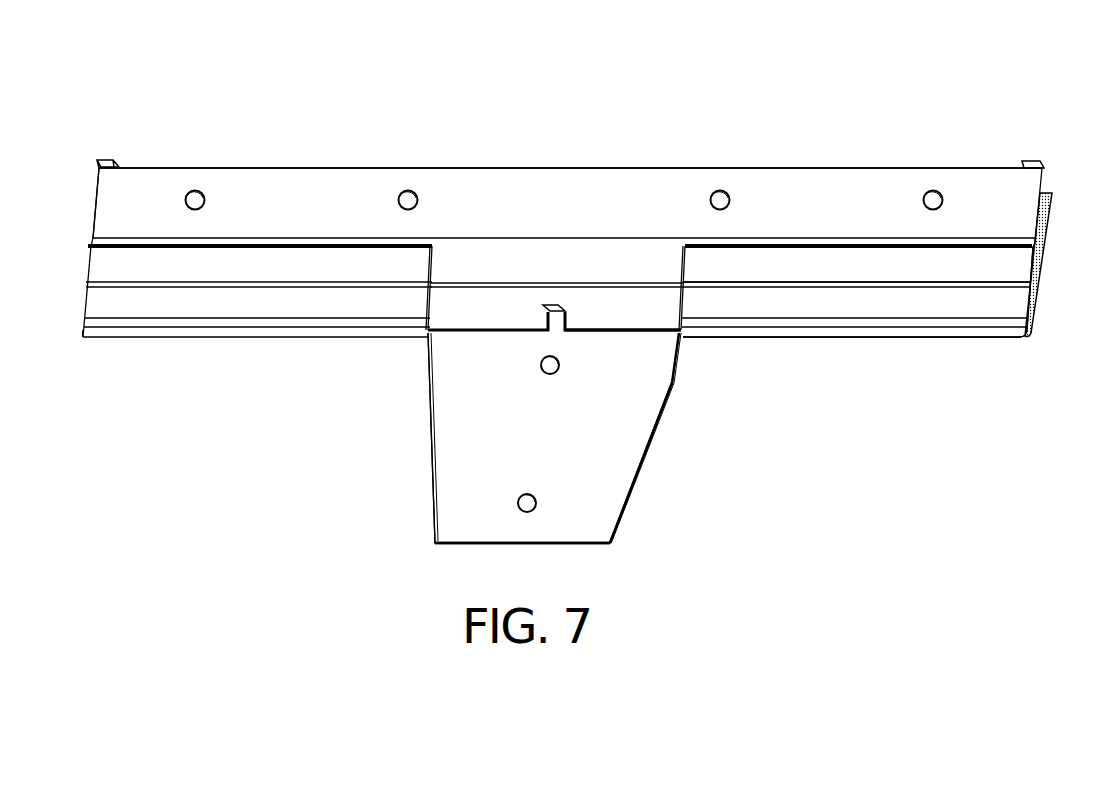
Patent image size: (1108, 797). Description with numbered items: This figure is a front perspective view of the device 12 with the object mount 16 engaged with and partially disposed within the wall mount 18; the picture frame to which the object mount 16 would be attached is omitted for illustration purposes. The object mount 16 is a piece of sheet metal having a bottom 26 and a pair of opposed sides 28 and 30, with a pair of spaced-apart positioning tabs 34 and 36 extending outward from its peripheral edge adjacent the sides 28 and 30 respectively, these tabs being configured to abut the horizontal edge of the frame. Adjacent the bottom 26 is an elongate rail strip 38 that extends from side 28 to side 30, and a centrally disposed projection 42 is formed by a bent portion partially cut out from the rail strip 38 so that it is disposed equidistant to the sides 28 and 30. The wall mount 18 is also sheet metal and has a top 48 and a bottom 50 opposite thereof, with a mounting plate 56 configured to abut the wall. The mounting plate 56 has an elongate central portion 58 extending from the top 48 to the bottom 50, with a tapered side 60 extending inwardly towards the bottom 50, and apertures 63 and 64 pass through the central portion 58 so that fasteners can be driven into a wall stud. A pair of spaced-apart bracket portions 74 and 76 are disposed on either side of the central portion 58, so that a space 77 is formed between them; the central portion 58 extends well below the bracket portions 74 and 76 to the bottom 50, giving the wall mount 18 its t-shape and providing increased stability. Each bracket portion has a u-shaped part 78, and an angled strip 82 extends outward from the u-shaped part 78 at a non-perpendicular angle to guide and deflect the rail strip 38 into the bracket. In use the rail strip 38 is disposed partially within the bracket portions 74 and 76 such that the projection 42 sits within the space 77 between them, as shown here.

The device 12 is at (934, 118).
The object mount 16 is at (507, 185).
The wall mount 18 is at (1005, 268).
The bottom 26 is at (633, 318).
The side 28 is at (92, 200).
The side 30 is at (1042, 207).
The positioning tab 34 is at (1031, 160).
The positioning tab 36 is at (106, 160).
The rail strip 38 is at (497, 320).
The projection 42 is at (554, 298).
The top 48 is at (290, 162).
The bottom 50 is at (455, 549).
The mounting plate 56 is at (607, 446).
The central portion 58 is at (499, 432).
The tapered side 60 is at (564, 200).
The aperture 63 is at (556, 374).
The aperture 64 is at (537, 503).
The bracket portion 74 is at (230, 360).
The bracket portion 76 is at (851, 354).
The space 77 is at (455, 342).
The u-shaped part 78 is at (977, 308).
The angled strip 82 is at (917, 275).